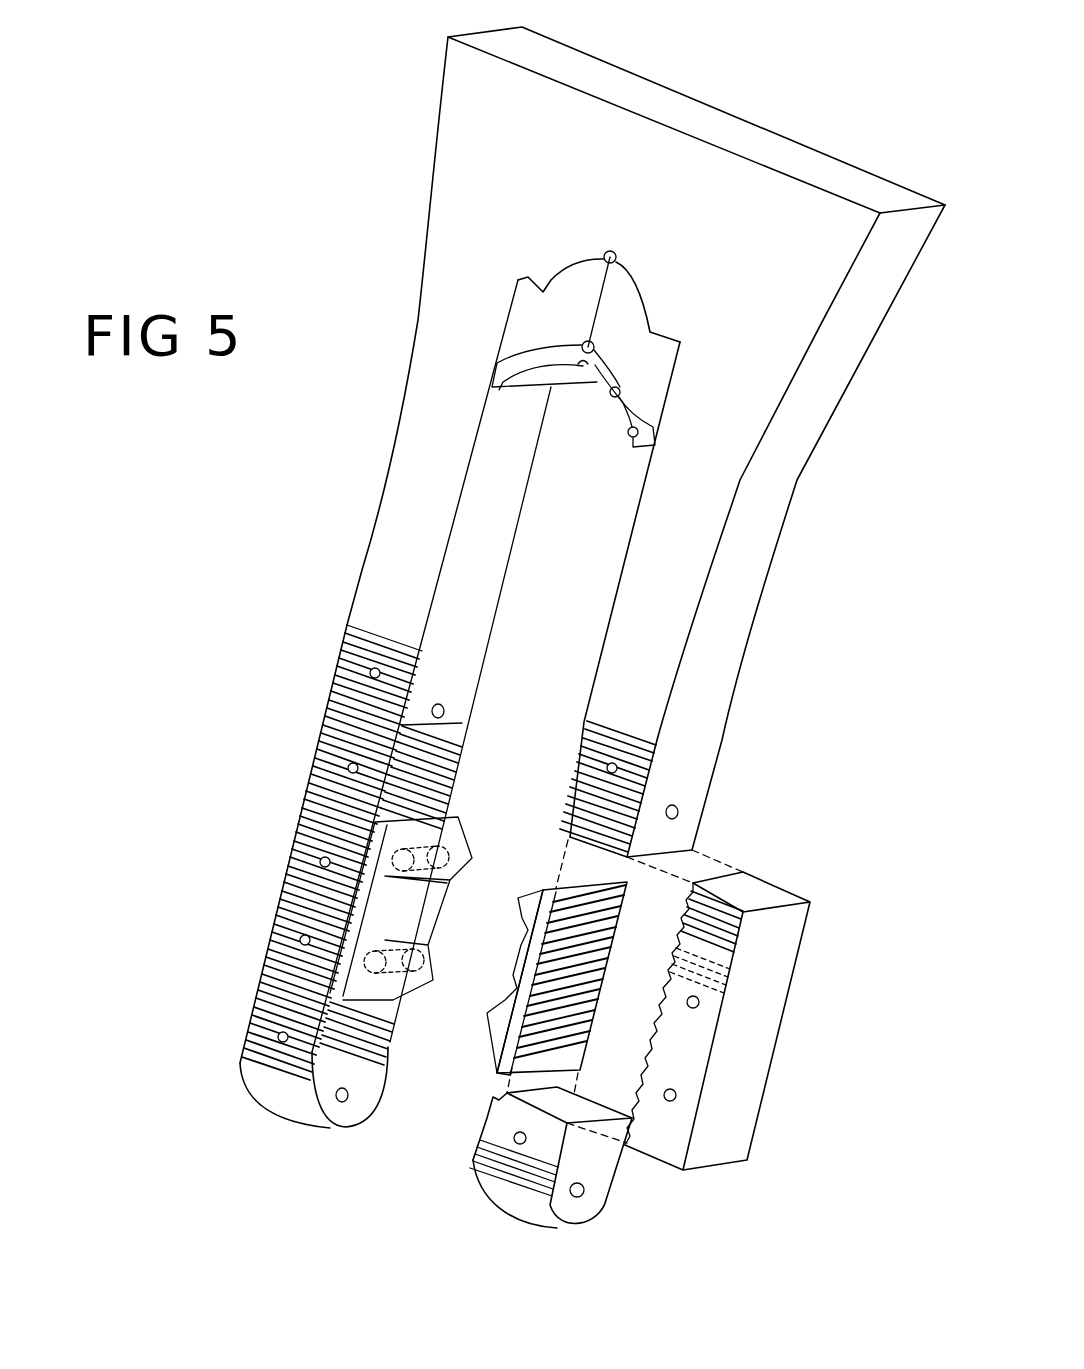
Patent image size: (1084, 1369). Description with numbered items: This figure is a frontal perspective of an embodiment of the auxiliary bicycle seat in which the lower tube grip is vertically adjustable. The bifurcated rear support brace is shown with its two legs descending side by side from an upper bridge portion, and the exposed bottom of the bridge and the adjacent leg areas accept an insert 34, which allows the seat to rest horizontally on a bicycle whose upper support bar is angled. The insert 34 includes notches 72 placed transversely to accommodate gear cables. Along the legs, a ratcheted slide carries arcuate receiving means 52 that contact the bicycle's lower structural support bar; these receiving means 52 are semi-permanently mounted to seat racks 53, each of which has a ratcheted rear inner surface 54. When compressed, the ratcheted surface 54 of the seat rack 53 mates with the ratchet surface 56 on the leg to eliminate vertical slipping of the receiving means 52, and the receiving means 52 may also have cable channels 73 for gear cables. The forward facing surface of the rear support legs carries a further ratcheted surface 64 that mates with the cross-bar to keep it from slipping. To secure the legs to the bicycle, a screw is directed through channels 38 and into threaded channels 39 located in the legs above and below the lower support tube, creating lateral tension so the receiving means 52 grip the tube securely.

The insert 34 is at (633, 338).
The channels 38 is at (680, 812).
The threaded channels 39 is at (446, 712).
The arcuate receiving means 52 is at (513, 905).
The seat racks 53 is at (315, 833).
The ratcheted rear inner surface 54 is at (580, 987).
The ratchet surface 56 is at (453, 768).
The ratcheted surface 64 is at (268, 917).
The notches 72 is at (596, 341).
The cable channels 73 is at (510, 983).